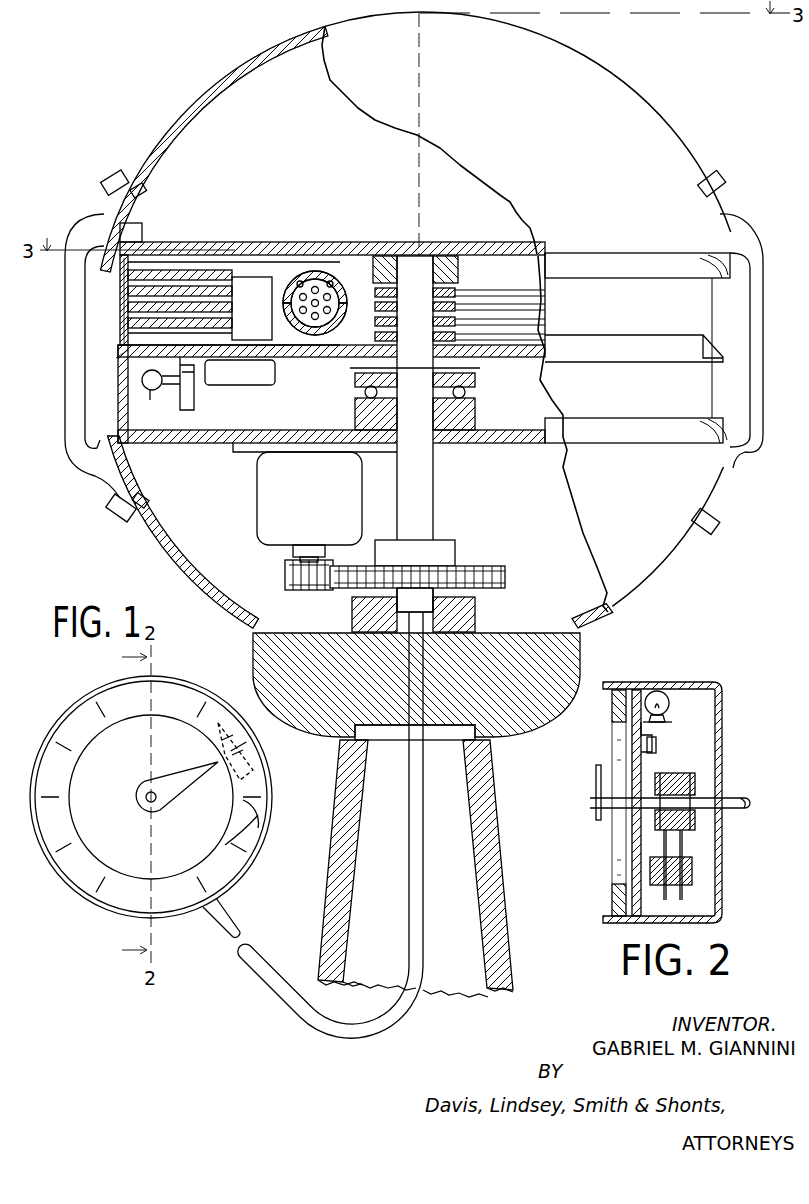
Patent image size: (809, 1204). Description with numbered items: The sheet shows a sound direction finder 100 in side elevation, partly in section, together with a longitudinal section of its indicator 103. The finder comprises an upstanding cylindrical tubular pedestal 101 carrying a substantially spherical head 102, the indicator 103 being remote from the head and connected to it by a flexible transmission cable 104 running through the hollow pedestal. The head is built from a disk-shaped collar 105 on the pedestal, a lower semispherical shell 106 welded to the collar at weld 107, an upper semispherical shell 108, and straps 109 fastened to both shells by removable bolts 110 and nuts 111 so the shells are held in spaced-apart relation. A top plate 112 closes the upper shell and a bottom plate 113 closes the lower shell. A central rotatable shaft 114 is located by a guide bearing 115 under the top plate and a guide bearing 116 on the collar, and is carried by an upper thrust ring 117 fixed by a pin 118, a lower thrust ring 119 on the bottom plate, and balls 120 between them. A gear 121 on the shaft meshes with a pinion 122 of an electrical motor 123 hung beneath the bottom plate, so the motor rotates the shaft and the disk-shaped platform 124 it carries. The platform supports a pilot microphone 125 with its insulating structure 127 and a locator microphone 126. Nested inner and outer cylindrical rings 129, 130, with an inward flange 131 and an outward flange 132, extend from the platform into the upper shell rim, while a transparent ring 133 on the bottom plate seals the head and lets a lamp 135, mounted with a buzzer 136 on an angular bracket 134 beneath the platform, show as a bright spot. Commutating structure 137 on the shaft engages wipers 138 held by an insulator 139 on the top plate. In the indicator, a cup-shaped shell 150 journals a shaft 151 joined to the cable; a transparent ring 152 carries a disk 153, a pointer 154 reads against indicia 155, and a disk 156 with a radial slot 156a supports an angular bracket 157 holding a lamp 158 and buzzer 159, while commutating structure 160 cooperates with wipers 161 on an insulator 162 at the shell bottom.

In FIG. 1, the sound direction finder 100 is at (526, 312).
In FIG. 1, the cylindrical tubular pedestal 101 is at (500, 855).
In FIG. 1, the spherical head 102 is at (663, 577).
In FIG. 1, the indicator 103 is at (74, 693).
In FIG. 1, the flexible transmission cable 104 is at (322, 1035).
In FIG. 1, the disk-shaped collar 105 is at (572, 665).
In FIG. 1, the lower semispherical shell 106 is at (168, 565).
In FIG. 1, the weld 107 is at (576, 624).
In FIG. 1, the upper semispherical shell 108 is at (232, 73).
In FIG. 1, the straps 109 is at (752, 238).
In FIG. 1, the removable bolts 110 is at (148, 192).
In FIG. 1, the nuts 111 is at (110, 178).
In FIG. 1, the top plate 112 is at (226, 250).
In FIG. 1, the bottom plate 113 is at (524, 443).
In FIG. 1, the rotatable shaft 114 is at (433, 492).
In FIG. 1, the guide bearing 115 is at (462, 268).
In FIG. 1, the guide bearing 116 is at (472, 612).
In FIG. 1, the upper thrust ring 117 is at (465, 392).
In FIG. 1, the pin 118 is at (355, 376).
In FIG. 1, the lower thrust ring 119 is at (472, 416).
In FIG. 1, the balls 120 is at (355, 412).
In FIG. 1, the gear 121 is at (505, 578).
In FIG. 1, the pinion 122 is at (284, 580).
In FIG. 1, the electrical motor 123 is at (309, 507).
In FIG. 1, the platform 124 is at (512, 362).
In FIG. 1, the pilot microphone 125 is at (252, 308).
In FIG. 1, the locator microphone 126 is at (386, 253).
In FIG. 1, the insulating structure 127 is at (262, 272).
In FIG. 1, the inner cylindrical ring 129 is at (132, 262).
In FIG. 1, the outer cylindrical ring 130 is at (120, 285).
In FIG. 1, the inward flange 131 is at (104, 362).
In FIG. 1, the outward flange 132 is at (102, 301).
In FIG. 1, the transparent ring 133 is at (118, 392).
In FIG. 1, the angular bracket 134 is at (180, 370).
In FIG. 1, the lamp 135 is at (155, 395).
In FIG. 1, the audible alarm or buzzer 136 is at (252, 385).
In FIG. 1, the commutating structure 137 is at (546, 290).
In FIG. 1, the wipers 138 is at (556, 298).
In FIG. 1, the insulator 139 is at (508, 251).
In FIG. 2, the cup-shaped shell 150 is at (688, 683).
In FIG. 1, the shaft 151 is at (140, 797).
In FIG. 2, the shaft 151 is at (727, 799).
In FIG. 1, the transparent ring 152 is at (170, 697).
In FIG. 2, the transparent ring 152 is at (613, 700).
In FIG. 1, the disk 153 is at (190, 852).
In FIG. 2, the disk 153 is at (633, 735).
In FIG. 1, the pointer 154 is at (186, 787).
In FIG. 2, the pointer 154 is at (597, 790).
In FIG. 1, the indicia 155 is at (262, 818).
In FIG. 2, the disk 156 is at (641, 755).
In FIG. 1, the radially disposed slot 156a is at (245, 757).
In FIG. 2, the angular bracket 157 is at (672, 727).
In FIG. 2, the lamp 158 is at (670, 705).
In FIG. 2, the audible alarm or buzzer 159 is at (657, 745).
In FIG. 2, the commutating structure 160 is at (696, 822).
In FIG. 2, the wipers 161 is at (680, 850).
In FIG. 2, the insulator 162 is at (700, 882).